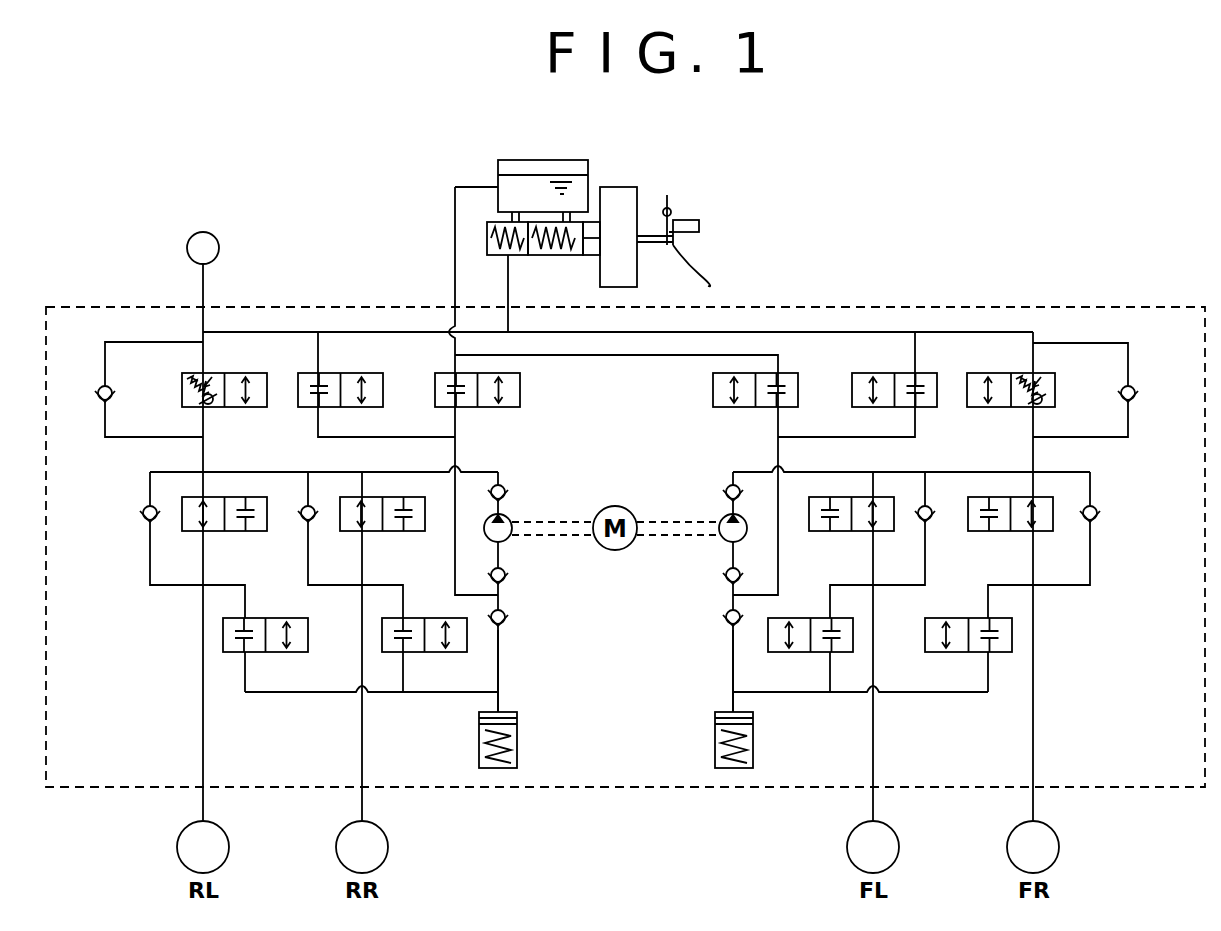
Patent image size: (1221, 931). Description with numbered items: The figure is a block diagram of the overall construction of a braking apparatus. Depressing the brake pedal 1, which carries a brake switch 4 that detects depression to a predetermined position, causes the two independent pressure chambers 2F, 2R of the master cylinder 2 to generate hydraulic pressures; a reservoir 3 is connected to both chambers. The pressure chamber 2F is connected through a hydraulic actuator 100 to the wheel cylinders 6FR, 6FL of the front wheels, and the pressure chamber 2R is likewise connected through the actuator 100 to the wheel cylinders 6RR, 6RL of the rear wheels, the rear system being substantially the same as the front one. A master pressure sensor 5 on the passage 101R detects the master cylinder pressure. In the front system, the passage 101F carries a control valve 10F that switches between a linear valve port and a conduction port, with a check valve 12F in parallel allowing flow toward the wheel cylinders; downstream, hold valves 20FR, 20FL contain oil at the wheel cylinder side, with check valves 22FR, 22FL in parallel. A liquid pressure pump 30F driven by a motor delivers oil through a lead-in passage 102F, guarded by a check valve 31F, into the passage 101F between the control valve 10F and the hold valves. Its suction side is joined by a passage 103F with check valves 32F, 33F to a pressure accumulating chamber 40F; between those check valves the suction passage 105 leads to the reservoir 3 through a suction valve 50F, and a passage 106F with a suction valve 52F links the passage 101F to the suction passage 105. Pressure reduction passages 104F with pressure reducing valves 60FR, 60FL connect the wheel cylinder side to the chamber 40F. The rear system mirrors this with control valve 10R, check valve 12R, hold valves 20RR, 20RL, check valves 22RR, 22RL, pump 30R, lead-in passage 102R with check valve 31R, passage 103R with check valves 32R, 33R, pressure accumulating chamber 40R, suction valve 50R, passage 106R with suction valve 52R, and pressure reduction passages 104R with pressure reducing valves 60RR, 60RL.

The brake pedal 1 is at (708, 278).
The master cylinder 2 is at (588, 220).
The pressure chamber 2R is at (497, 257).
The pressure chamber 2F is at (552, 257).
The reservoir 3 is at (530, 160).
The brake switch 4 is at (687, 213).
The master pressure sensor 5 is at (211, 233).
The hydraulic actuator 100 is at (1055, 307).
The passage 101R is at (322, 332).
The passage 101F is at (722, 332).
The lead-in passage 102R is at (238, 454).
The lead-in passage 102F is at (885, 472).
The passage 103R is at (498, 650).
The passage 103F is at (732, 680).
The pressure reduction passage 104R is at (257, 693).
The pressure reduction passage 104F is at (893, 692).
The suction passage 105 is at (452, 235).
The passage 106R is at (340, 437).
The passage 106F is at (895, 437).
The control valve 10R is at (227, 373).
The control valve 10F is at (1043, 373).
The check valve 12R is at (100, 383).
The check valve 12F is at (1136, 383).
The hold valve 20RR is at (237, 531).
The hold valve 20RL is at (393, 533).
The hold valve 20FL is at (820, 532).
The hold valve 20FR is at (1000, 532).
The check valve 22RR is at (140, 512).
The check valve 22RL is at (308, 504).
The check valve 22FL is at (928, 522).
The check valve 22FR is at (1097, 512).
The liquid pressure pump 30R is at (506, 518).
The liquid pressure pump 30F is at (724, 518).
The check valve 31R is at (508, 482).
The check valve 31F is at (722, 483).
The check valve 32R is at (508, 574).
The check valve 32F is at (723, 574).
The check valve 33R is at (508, 615).
The check valve 33F is at (727, 619).
The pressure accumulating chamber 40R is at (525, 762).
The pressure accumulating chamber 40F is at (710, 762).
The suction valve 50R is at (518, 396).
The suction valve 50F is at (713, 397).
The suction valve 52R is at (349, 373).
The suction valve 52F is at (850, 384).
The pressure reducing valve 60RR is at (308, 650).
The pressure reducing valve 60RL is at (420, 653).
The pressure reducing valve 60FL is at (775, 652).
The pressure reducing valve 60FR is at (925, 646).
The wheel cylinder 6RL is at (203, 847).
The wheel cylinder 6RR is at (362, 847).
The wheel cylinder 6FL is at (873, 847).
The wheel cylinder 6FR is at (1033, 847).